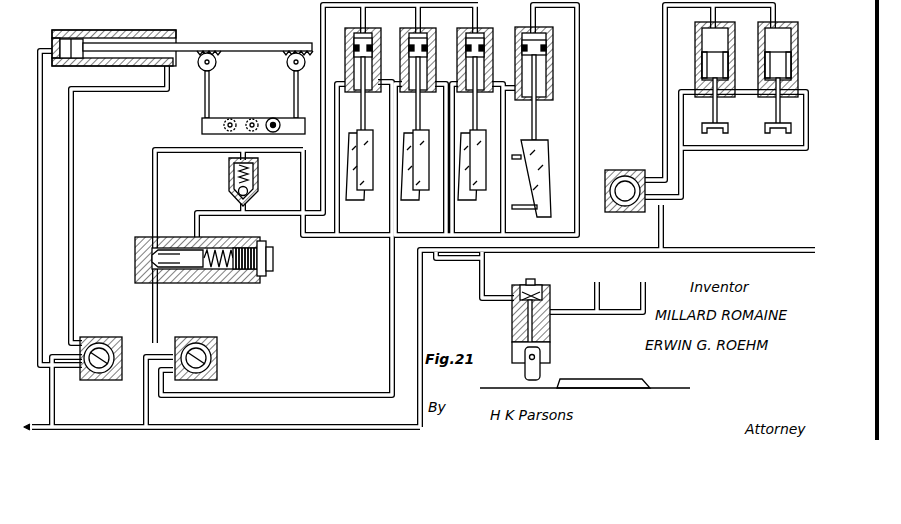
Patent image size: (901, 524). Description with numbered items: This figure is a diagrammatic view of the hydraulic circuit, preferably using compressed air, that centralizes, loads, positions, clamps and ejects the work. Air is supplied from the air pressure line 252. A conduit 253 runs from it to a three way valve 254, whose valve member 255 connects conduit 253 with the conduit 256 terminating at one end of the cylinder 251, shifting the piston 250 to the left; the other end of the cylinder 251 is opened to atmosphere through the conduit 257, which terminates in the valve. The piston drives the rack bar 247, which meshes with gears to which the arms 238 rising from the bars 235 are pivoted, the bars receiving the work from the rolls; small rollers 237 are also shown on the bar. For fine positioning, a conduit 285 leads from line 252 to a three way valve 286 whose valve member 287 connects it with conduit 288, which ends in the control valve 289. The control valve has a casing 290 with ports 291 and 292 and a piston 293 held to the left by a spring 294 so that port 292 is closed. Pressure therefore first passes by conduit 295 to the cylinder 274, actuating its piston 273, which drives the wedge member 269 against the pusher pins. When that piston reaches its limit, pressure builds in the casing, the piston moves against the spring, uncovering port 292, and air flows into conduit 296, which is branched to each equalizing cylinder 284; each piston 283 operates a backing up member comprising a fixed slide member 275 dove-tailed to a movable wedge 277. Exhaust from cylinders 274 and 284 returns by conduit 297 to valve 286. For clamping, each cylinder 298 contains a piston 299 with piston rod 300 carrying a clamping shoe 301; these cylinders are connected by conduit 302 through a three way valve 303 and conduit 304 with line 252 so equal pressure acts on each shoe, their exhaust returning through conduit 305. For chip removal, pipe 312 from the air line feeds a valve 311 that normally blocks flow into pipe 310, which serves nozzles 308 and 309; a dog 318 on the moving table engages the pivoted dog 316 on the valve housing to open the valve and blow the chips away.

The piston 250 is at (78, 45).
The cylinder 251 is at (138, 30).
The rack bar 247 is at (236, 46).
The arm 238 is at (205, 96).
The roller 237 is at (232, 119).
The bar 235 is at (272, 118).
The conduit 257 is at (42, 78).
The conduit 256 is at (73, 186).
The conduit 295 is at (182, 149).
The conduit 296 is at (254, 213).
The port 291 is at (145, 238).
The port 292 is at (208, 242).
The control valve 289 is at (258, 239).
The piston 293 is at (196, 270).
The spring 294 is at (222, 270).
The casing 290 is at (259, 280).
The conduit 288 is at (154, 306).
The three way valve 254 is at (98, 340).
The valve member 255 is at (96, 376).
The conduit 253 is at (54, 413).
The conduit 285 is at (148, 412).
The three way valve 286 is at (219, 344).
The valve member 287 is at (218, 368).
The conduit 297 is at (330, 393).
The cylinder 284 is at (369, 28).
The piston 283 is at (375, 50).
The piston 273 is at (531, 28).
The cylinder 274 is at (555, 76).
The wedge member 269 is at (548, 160).
The fixed slide member 275 is at (348, 198).
The movable wedge 277 is at (374, 203).
The cylinder 298 is at (700, 30).
The piston 299 is at (705, 62).
The conduit 304 is at (666, 62).
The piston rod 300 is at (774, 108).
The clamping shoe 301 is at (722, 132).
The three way valve 303 is at (606, 168).
The conduit 305 is at (684, 172).
The conduit 302 is at (666, 215).
The air pressure line 252 is at (718, 248).
The pipe 312 is at (480, 272).
The valve 311 is at (541, 285).
The nozzle 308 is at (595, 298).
The nozzle 309 is at (641, 288).
The pipe 310 is at (566, 313).
The dog 316 is at (541, 365).
The dog 318 is at (590, 380).